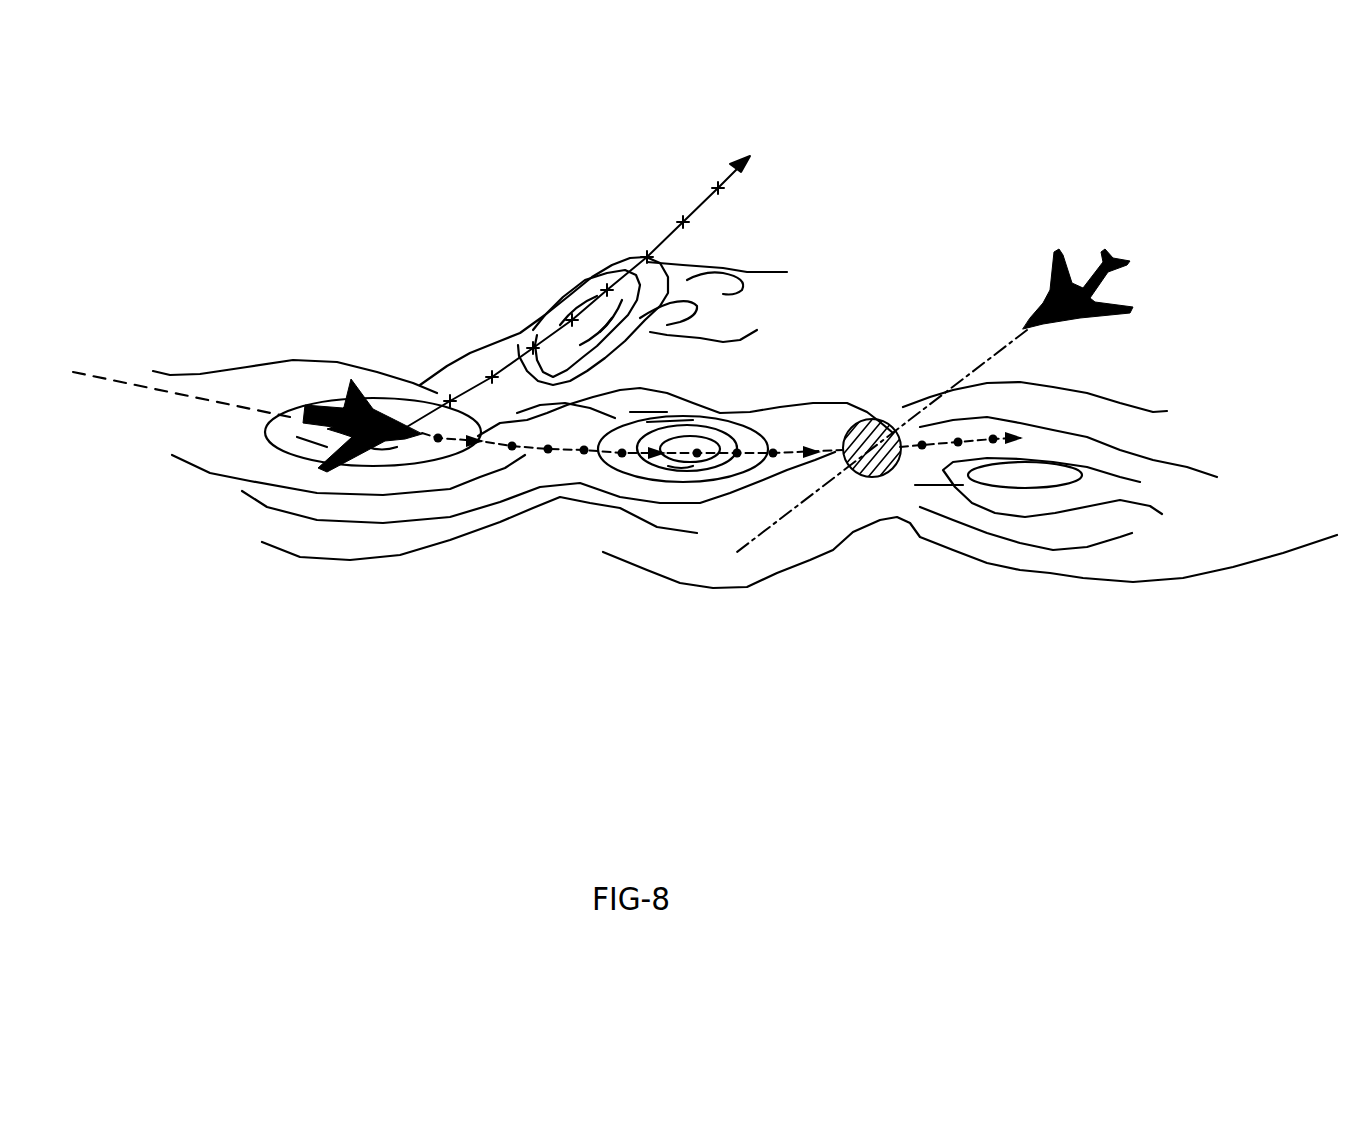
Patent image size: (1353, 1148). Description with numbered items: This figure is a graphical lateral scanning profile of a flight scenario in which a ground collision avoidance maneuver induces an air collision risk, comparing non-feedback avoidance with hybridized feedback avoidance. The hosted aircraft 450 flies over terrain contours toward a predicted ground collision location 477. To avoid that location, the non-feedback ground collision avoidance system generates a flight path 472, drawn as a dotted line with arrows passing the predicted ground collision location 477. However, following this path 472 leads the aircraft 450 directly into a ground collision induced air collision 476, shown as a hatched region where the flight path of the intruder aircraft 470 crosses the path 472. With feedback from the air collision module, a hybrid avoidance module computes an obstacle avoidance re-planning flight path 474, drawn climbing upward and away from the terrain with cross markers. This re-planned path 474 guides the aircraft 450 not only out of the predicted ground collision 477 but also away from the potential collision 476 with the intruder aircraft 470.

The aircraft 450 is at (347, 412).
The intruder aircraft 470 is at (1067, 263).
The flight path 472 is at (620, 453).
The obstacle avoidance flight path 474 is at (587, 305).
The ground collision induced air collision 476 is at (877, 478).
The predicted ground collision location 477 is at (777, 620).